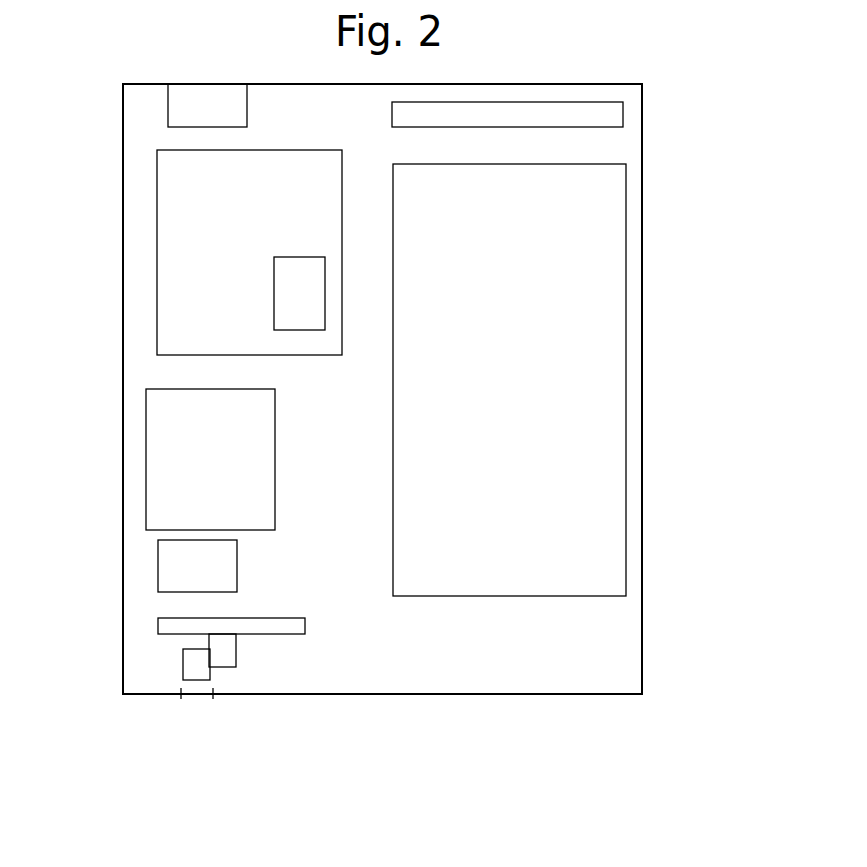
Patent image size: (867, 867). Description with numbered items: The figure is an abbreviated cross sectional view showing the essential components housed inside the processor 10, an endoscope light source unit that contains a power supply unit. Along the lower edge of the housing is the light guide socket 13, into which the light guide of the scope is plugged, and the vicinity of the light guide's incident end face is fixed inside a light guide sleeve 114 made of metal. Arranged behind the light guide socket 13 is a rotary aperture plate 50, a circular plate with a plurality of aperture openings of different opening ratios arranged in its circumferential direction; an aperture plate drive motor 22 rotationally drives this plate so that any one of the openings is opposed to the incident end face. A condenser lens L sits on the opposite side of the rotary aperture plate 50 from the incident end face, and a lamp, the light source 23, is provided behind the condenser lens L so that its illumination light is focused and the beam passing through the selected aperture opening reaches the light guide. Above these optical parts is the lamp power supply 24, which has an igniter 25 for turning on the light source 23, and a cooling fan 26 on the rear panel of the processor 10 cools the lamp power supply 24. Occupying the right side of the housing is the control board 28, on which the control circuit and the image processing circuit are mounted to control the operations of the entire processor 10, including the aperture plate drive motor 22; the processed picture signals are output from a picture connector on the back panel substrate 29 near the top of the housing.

The processor 10 is at (677, 262).
The cooling fan 26 is at (175, 107).
The back panel substrate 29 is at (617, 116).
The lamp power supply 24 is at (172, 307).
The igniter 25 is at (282, 260).
The control board 28 is at (597, 367).
The lamp (light source) 23 is at (150, 437).
The condenser lens L is at (165, 560).
The rotary aperture plate 50 is at (165, 627).
The aperture plate drive motor 22 is at (233, 663).
The light guide sleeve 114 is at (188, 668).
The light guide socket 13 is at (197, 695).